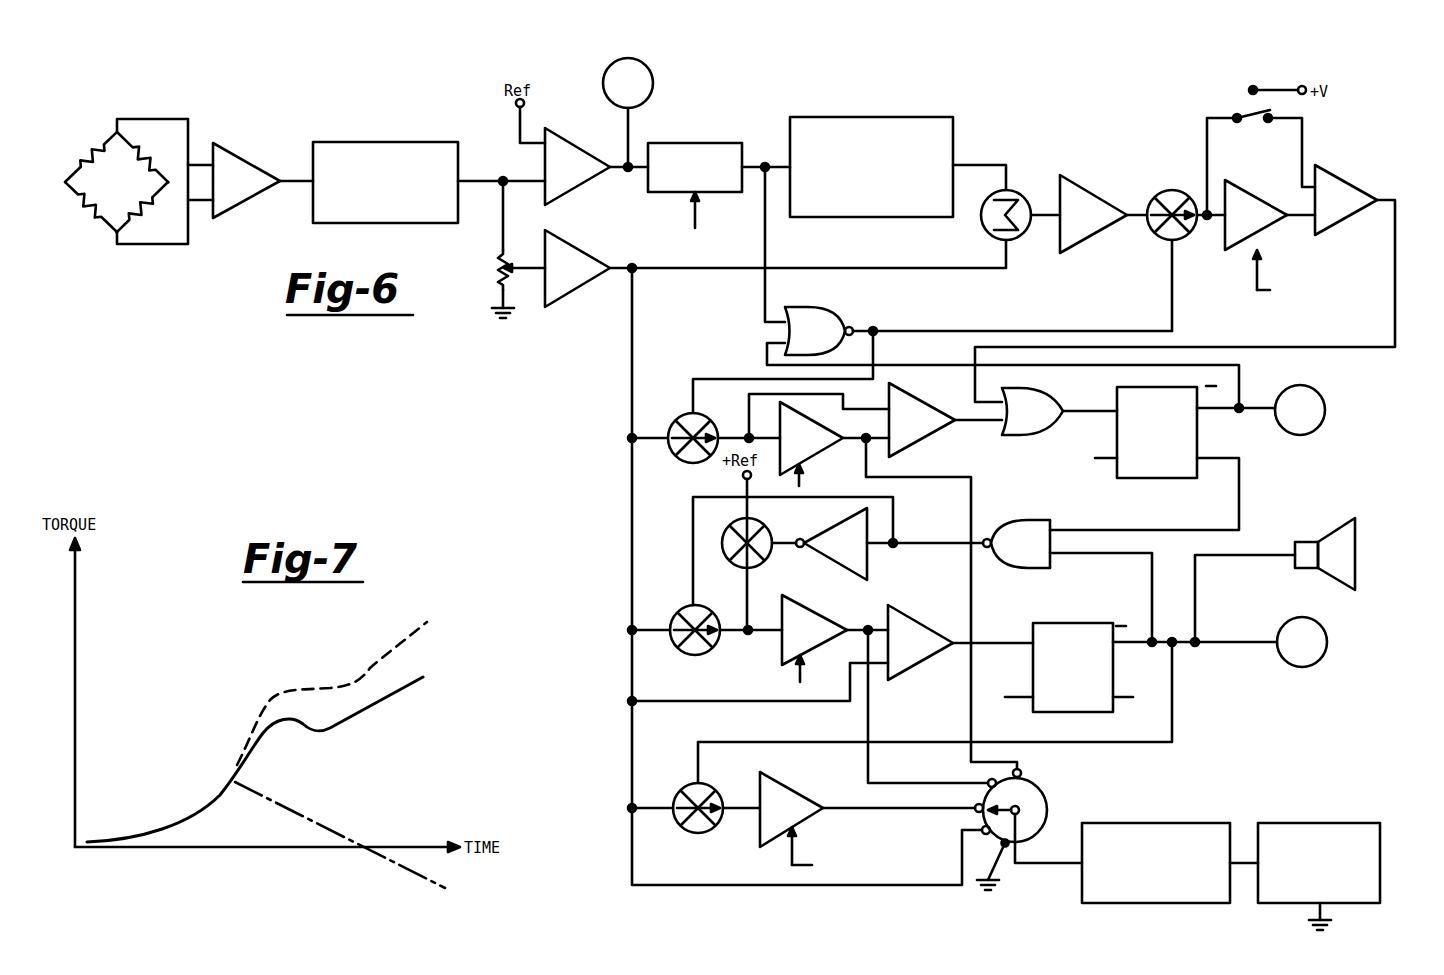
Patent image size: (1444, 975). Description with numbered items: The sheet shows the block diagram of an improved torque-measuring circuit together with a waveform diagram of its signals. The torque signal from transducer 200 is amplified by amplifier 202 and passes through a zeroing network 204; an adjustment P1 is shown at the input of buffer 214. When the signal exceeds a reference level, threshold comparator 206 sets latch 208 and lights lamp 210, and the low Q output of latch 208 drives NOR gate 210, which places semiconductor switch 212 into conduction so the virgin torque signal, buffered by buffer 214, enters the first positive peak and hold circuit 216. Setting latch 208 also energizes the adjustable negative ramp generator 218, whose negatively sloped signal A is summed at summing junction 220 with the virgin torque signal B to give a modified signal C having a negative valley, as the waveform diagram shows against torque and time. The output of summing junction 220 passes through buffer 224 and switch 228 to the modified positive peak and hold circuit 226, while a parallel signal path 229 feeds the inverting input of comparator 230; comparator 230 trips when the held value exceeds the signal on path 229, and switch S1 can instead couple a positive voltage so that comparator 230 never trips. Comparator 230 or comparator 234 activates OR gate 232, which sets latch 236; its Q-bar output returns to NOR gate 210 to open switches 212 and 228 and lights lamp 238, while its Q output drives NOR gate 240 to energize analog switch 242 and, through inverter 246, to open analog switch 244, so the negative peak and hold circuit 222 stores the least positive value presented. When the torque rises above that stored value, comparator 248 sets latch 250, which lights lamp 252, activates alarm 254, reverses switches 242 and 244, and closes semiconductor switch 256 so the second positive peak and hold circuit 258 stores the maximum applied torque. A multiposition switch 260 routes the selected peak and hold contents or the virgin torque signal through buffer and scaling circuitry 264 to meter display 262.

In FIG. 6, the transducer 200 is at (118, 224).
In FIG. 6, the amplifier 202 is at (252, 163).
In FIG. 6, the zeroing network 204 is at (418, 122).
In FIG. 6, the threshold comparator 206 is at (572, 190).
In FIG. 6, the latch 208 is at (722, 125).
In FIG. 6, the lamp / NOR gate 210 is at (653, 78).
In FIG. 6, the semiconductor switch 212 is at (676, 460).
In FIG. 6, the buffer 214 is at (572, 292).
In FIG. 6, the first positive peak and hold circuit 216 is at (832, 418).
In FIG. 6, the adjustable negative ramp generator 218 is at (920, 98).
In FIG. 6, the summing junction 220 is at (985, 232).
In FIG. 6, the negative peak and hold circuit 222 is at (840, 594).
In FIG. 6, the buffer 224 is at (1088, 192).
In FIG. 6, the modified positive peak and hold circuit 226 is at (1220, 240).
In FIG. 6, the switch 228 is at (1155, 235).
In FIG. 6, the parallel signal path 229 is at (1205, 148).
In FIG. 6, the comparator 230 is at (1337, 222).
In FIG. 6, the OR gate 232 is at (1036, 392).
In FIG. 6, the comparator 234 is at (933, 396).
In FIG. 6, the latch 236 is at (1198, 437).
In FIG. 6, the lamp 238 is at (1323, 398).
In FIG. 6, the NOR gate 240 is at (1045, 500).
In FIG. 6, the analog switch 242 is at (700, 655).
In FIG. 6, the analog switch 244 is at (776, 514).
In FIG. 6, the inverter 246 is at (858, 577).
In FIG. 6, the comparator 248 is at (912, 668).
In FIG. 6, the latch 250 is at (1108, 600).
In FIG. 6, the lamp 252 is at (1287, 663).
In FIG. 6, the alarm 254 is at (1335, 532).
In FIG. 6, the semiconductor switch 256 is at (683, 832).
In FIG. 6, the second positive peak and hold circuit 258 is at (820, 780).
In FIG. 6, the multiposition switch 260 is at (1040, 785).
In FIG. 6, the meter display 262 is at (1340, 798).
In FIG. 6, the buffer and scaling circuitry 264 is at (1186, 800).
In FIG. 6, the potentiometer P1 is at (500, 288).
In FIG. 6, the switch S1 is at (1252, 122).
In FIG. 7, the negative ramp signal A is at (325, 826).
In FIG. 7, the virgin torque signal B is at (328, 690).
In FIG. 7, the modified signal C is at (382, 700).